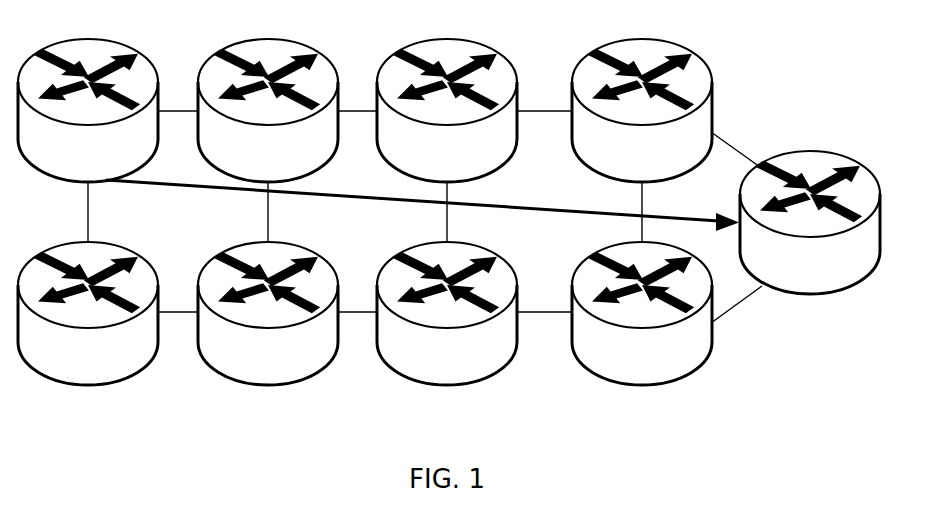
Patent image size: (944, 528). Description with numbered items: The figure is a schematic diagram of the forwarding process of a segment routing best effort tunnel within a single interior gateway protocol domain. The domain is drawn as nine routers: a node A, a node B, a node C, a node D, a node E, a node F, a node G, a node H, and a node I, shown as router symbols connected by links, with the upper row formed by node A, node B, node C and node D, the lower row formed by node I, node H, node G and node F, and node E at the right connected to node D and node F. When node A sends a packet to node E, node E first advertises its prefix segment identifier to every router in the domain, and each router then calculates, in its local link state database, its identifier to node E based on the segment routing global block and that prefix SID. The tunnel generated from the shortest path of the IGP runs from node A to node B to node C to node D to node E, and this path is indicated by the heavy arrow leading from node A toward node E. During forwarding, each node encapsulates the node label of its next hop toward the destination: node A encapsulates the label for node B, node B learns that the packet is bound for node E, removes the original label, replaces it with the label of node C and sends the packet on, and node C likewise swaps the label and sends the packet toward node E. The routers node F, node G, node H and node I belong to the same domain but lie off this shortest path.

The node A is at (88, 93).
The node B is at (268, 93).
The node C is at (447, 93).
The node D is at (642, 93).
The node E is at (810, 204).
The node F is at (642, 333).
The node G is at (447, 333).
The node H is at (268, 333).
The node I is at (88, 333).